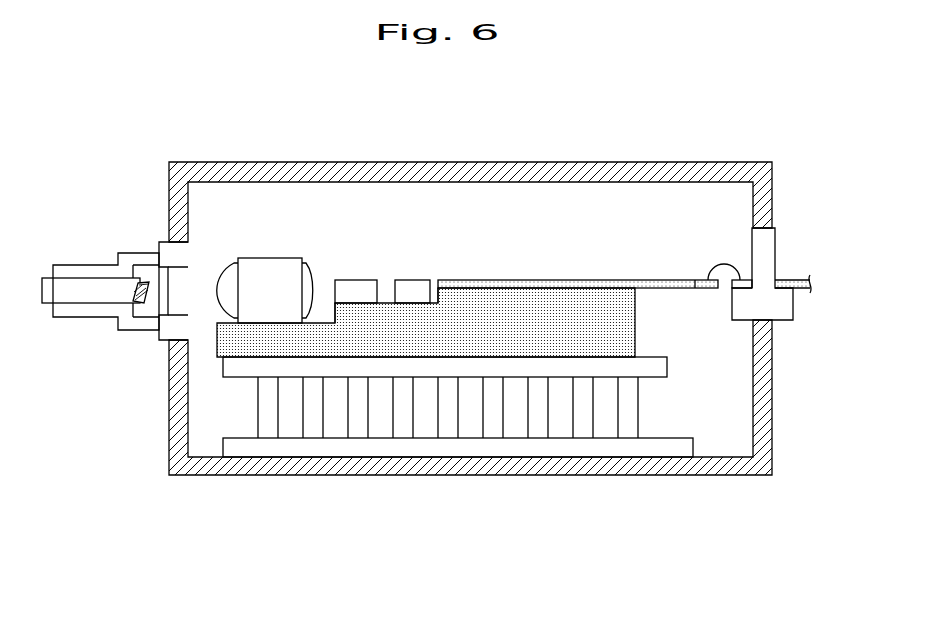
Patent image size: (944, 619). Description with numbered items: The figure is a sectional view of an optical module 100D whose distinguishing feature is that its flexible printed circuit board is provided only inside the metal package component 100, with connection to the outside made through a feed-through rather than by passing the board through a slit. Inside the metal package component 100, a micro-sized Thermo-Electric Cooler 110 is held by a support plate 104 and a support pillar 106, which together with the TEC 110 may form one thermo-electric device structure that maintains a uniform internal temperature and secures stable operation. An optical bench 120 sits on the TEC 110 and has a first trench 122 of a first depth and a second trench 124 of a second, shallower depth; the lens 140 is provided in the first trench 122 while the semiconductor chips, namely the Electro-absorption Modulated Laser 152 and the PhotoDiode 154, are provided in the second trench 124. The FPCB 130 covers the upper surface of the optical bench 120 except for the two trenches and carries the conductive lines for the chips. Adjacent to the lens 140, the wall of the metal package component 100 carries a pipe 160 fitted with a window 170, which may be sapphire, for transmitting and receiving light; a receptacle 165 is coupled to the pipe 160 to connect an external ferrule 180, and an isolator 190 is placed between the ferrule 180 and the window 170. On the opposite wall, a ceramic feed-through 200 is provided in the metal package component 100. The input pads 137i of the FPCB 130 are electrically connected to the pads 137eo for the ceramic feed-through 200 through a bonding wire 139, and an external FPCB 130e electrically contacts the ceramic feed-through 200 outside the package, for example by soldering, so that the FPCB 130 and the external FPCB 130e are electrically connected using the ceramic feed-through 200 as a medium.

The optical module 100D is at (733, 91).
The metal package component 100 is at (605, 165).
The support plate 104 is at (585, 448).
The support pillar 106 is at (493, 428).
The Thermo-Electric Cooler (TEC) 110 is at (655, 367).
The optical bench 120 is at (627, 323).
The first trench 122 is at (333, 308).
The second trench 124 is at (432, 293).
The Flexible Printed Circuit Board (FPCB) 130 is at (557, 283).
The external FPCB 130e is at (795, 278).
The input pads 137i is at (700, 280).
The pads for the ceramic feed-through 137eo is at (748, 283).
The bonding wire 139 is at (715, 262).
The lens 140 is at (270, 258).
The Electro-absorption Modulated Laser (EML) 152 is at (355, 287).
The PhotoDiode (PD) 154 is at (410, 287).
The pipe 160 is at (167, 335).
The receptacle 165 is at (87, 317).
The window 170 is at (183, 292).
The ferrule 180 is at (77, 283).
The isolator 190 is at (147, 282).
The ceramic feed-through 200 is at (785, 307).